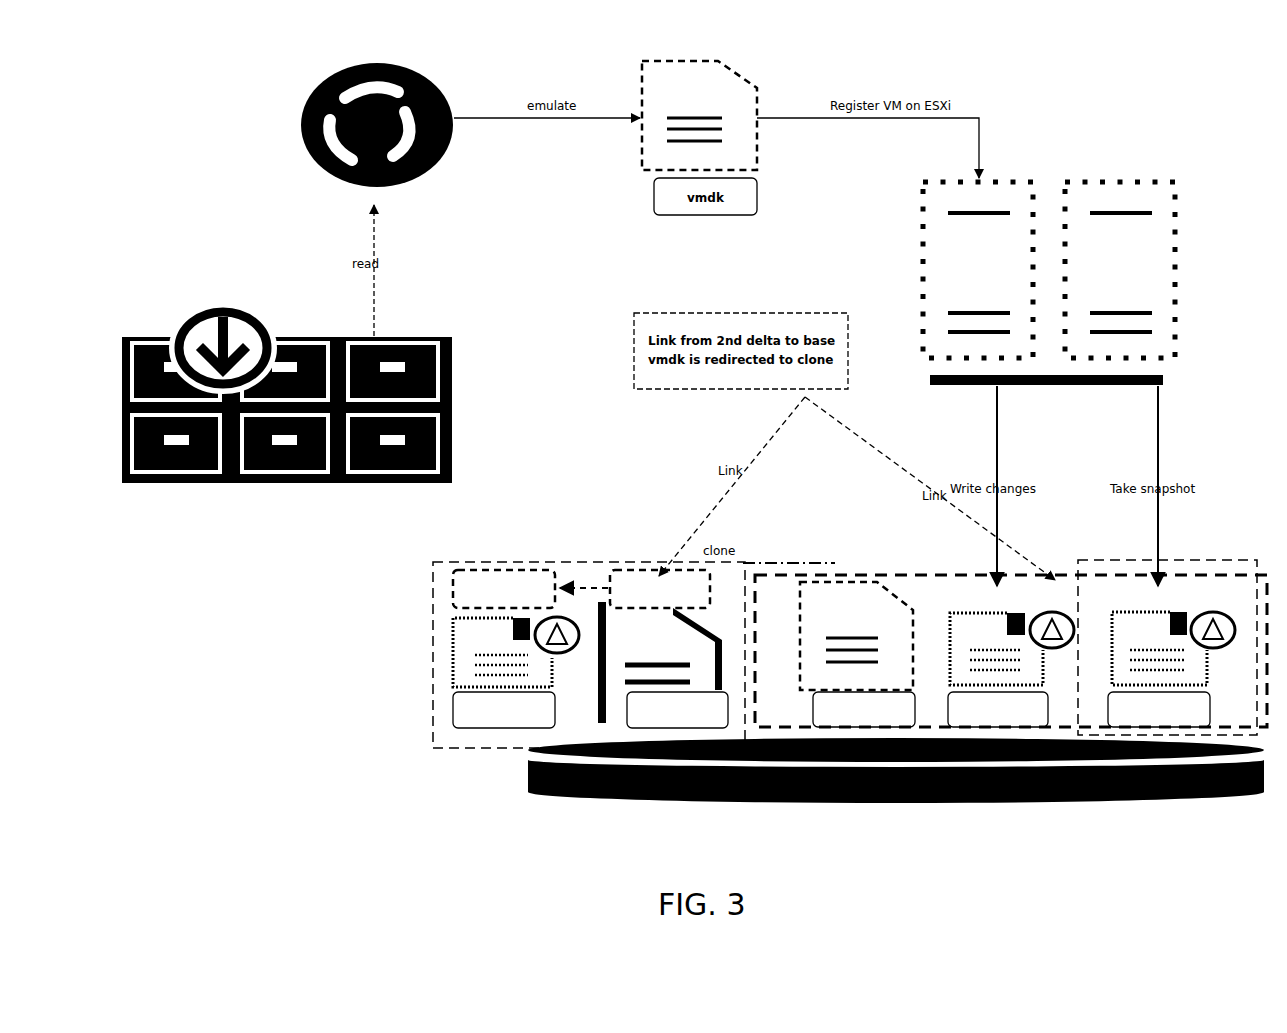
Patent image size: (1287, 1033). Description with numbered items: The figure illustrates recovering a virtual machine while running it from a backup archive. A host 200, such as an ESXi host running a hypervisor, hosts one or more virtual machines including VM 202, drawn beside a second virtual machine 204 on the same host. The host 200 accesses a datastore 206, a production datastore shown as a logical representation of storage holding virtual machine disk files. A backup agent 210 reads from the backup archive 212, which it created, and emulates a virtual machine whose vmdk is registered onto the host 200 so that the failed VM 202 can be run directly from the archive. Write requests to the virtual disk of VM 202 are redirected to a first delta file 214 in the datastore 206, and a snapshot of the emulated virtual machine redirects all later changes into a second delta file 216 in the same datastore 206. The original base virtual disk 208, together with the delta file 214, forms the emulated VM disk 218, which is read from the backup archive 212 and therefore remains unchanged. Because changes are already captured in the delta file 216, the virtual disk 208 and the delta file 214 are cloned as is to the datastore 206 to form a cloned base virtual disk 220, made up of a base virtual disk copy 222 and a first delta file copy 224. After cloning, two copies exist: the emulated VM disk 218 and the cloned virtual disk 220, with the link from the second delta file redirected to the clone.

The host 200 is at (1085, 390).
The virtual machine 202 is at (1155, 183).
The virtual machine 204 is at (940, 183).
The datastore 206 is at (1000, 805).
The virtual disk 208 is at (808, 694).
The backup agent 210 is at (316, 160).
The backup archive 212 is at (450, 480).
The delta file 214 is at (983, 612).
The delta file 216 is at (1145, 610).
The emulated VM disk 218 is at (1011, 632).
The cloned base virtual disk 220 is at (566, 639).
The base virtual disk copy 222 is at (605, 728).
The first delta file copy 224 is at (452, 642).